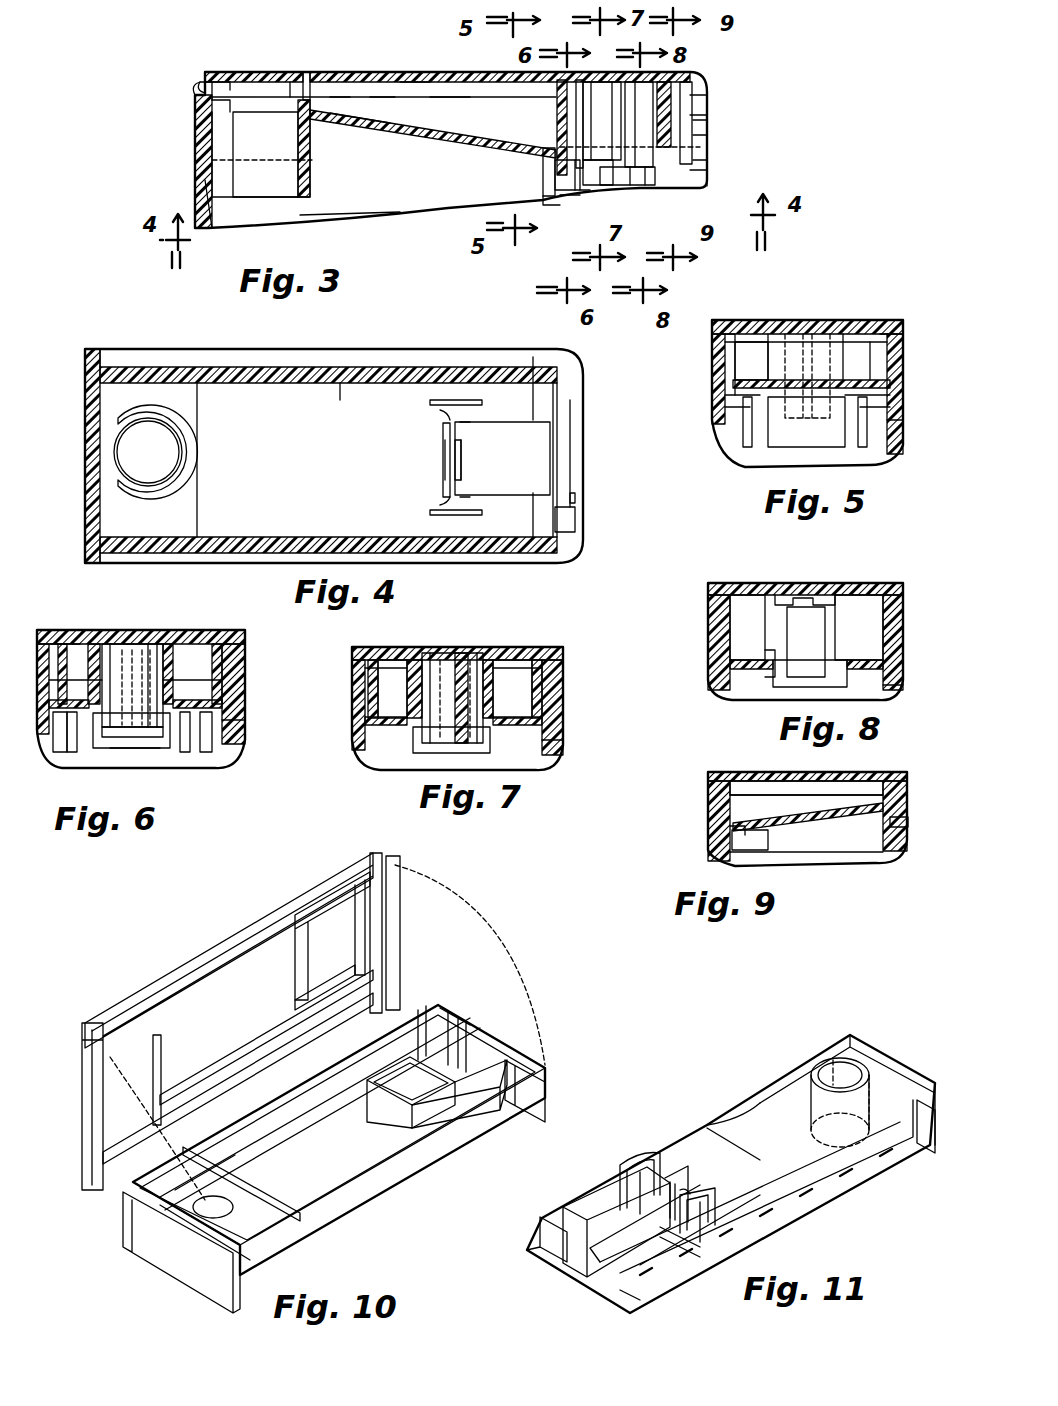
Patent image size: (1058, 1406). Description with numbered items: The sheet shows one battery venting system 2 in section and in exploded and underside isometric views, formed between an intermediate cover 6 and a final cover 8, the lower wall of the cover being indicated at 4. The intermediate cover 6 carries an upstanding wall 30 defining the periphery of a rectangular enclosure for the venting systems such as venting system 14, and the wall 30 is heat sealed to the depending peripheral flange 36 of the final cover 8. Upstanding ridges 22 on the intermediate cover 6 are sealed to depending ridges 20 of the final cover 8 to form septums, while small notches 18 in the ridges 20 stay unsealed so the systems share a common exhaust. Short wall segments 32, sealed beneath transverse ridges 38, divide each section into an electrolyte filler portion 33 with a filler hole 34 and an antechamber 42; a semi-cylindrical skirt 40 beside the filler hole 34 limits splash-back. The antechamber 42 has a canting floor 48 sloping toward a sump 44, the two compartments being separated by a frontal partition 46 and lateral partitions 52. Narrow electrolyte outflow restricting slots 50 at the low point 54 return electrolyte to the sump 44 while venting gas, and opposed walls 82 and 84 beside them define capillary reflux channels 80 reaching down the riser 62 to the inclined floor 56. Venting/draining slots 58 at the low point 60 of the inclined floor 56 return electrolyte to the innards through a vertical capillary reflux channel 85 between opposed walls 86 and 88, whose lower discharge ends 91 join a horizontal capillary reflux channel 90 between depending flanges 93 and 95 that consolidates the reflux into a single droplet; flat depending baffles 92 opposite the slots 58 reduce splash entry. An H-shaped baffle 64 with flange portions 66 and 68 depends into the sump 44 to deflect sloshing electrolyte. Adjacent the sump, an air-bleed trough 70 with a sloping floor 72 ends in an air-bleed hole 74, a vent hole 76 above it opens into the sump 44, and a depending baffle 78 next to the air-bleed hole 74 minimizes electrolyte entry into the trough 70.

In FIG. 3, the connector assembly 2 is at (372, 228).
In FIG. 3, the housing bottom wall 4 is at (205, 182).
In FIG. 4, the housing bottom wall 4 is at (95, 375).
In FIG. 5, the housing bottom wall 4 is at (900, 422).
In FIG. 6, the housing bottom wall 4 is at (212, 725).
In FIG. 7, the housing bottom wall 4 is at (532, 742).
In FIG. 8, the housing bottom wall 4 is at (885, 690).
In FIG. 3, the intermediate cover 6 is at (195, 120).
In FIG. 4, the intermediate cover 6 is at (235, 390).
In FIG. 5, the intermediate cover 6 is at (903, 338).
In FIG. 6, the intermediate cover 6 is at (215, 670).
In FIG. 7, the intermediate cover 6 is at (527, 696).
In FIG. 8, the intermediate cover 6 is at (890, 625).
In FIG. 9, the intermediate cover 6 is at (810, 820).
In FIG. 10, the intermediate cover 6 is at (518, 1058).
In FIG. 11, the intermediate cover 6 is at (790, 1118).
In FIG. 3, the final cover 8 is at (272, 78).
In FIG. 5, the final cover 8 is at (847, 332).
In FIG. 6, the final cover 8 is at (60, 640).
In FIG. 7, the final cover 8 is at (540, 657).
In FIG. 8, the final cover 8 is at (880, 592).
In FIG. 9, the final cover 8 is at (888, 786).
In FIG. 10, the final cover 8 is at (245, 1021).
In FIG. 3, the venting system 14 is at (215, 82).
In FIG. 3, the notches 18 is at (436, 109).
In FIG. 5, the notches 18 is at (740, 338).
In FIG. 10, the notches 18 is at (268, 950).
In FIG. 3, the depending ridges 20 is at (415, 88).
In FIG. 5, the depending ridges 20 is at (880, 340).
In FIG. 10, the depending ridges 20 is at (198, 983).
In FIG. 3, the upstanding ridges 22 is at (340, 103).
In FIG. 5, the upstanding ridges 22 is at (890, 372).
In FIG. 10, the upstanding ridges 22 is at (370, 1072).
In FIG. 3, the upstanding wall 30 is at (200, 106).
In FIG. 10, the upstanding wall 30 is at (130, 1205).
In FIG. 11, the upstanding wall 30 is at (921, 1150).
In FIG. 3, the short wall segments 32 is at (305, 105).
In FIG. 10, the short wall segments 32 is at (267, 1185).
In FIG. 3, the electrolyte filler portion 33 is at (255, 75).
In FIG. 3, the filler hole 34 is at (230, 100).
In FIG. 4, the filler hole 34 is at (118, 452).
In FIG. 10, the filler hole 34 is at (200, 1212).
In FIG. 11, the filler hole 34 is at (855, 1125).
In FIG. 3, the depending peripheral flange 36 is at (205, 90).
In FIG. 10, the depending peripheral flange 36 is at (100, 1090).
In FIG. 3, the transverse ridges 38 is at (300, 95).
In FIG. 10, the transverse ridges 38 is at (162, 1050).
In FIG. 3, the semi-cylindrical skirt 40 is at (305, 172).
In FIG. 4, the semi-cylindrical skirt 40 is at (192, 455).
In FIG. 11, the semi-cylindrical skirt 40 is at (828, 1062).
In FIG. 3, the antechamber 42 is at (380, 100).
In FIG. 5, the antechamber 42 is at (752, 360).
In FIG. 3, the sump 44 is at (557, 110).
In FIG. 6, the sump 44 is at (155, 667).
In FIG. 3, the frontal partition 46 is at (576, 125).
In FIG. 5, the frontal partition 46 is at (810, 350).
In FIG. 10, the frontal partition 46 is at (367, 1100).
In FIG. 3, the canting floor 48 is at (355, 132).
In FIG. 4, the canting floor 48 is at (360, 395).
In FIG. 5, the canting floor 48 is at (770, 386).
In FIG. 6, the canting floor 48 is at (135, 704).
In FIG. 7, the canting floor 48 is at (545, 718).
In FIG. 8, the canting floor 48 is at (740, 664).
In FIG. 10, the canting floor 48 is at (247, 1160).
In FIG. 11, the canting floor 48 is at (750, 1128).
In FIG. 3, the electrolyte outflow restricting slots 50 is at (690, 150).
In FIG. 7, the lateral partitions 52 is at (410, 680).
In FIG. 10, the lateral partitions 52 is at (395, 1077).
In FIG. 3, the low point 54 is at (698, 178).
In FIG. 8, the low point 54 is at (770, 652).
In FIG. 3, the inclined floor 56 is at (612, 178).
In FIG. 4, the inclined floor 56 is at (545, 452).
In FIG. 7, the inclined floor 56 is at (435, 753).
In FIG. 8, the inclined floor 56 is at (790, 684).
In FIG. 3, the venting/draining slots 58 is at (543, 160).
In FIG. 4, the venting/draining slots 58 is at (447, 470).
In FIG. 6, the venting/draining slots 58 is at (90, 732).
In FIG. 3, the low point 60 is at (550, 180).
In FIG. 6, the low point 60 is at (135, 738).
In FIG. 3, the riser 62 is at (652, 172).
In FIG. 8, the riser 62 is at (815, 668).
In FIG. 3, the H-shaped baffle 64 is at (597, 186).
In FIG. 6, the H-shaped baffle 64 is at (135, 665).
In FIG. 7, the H-shaped baffle 64 is at (446, 690).
In FIG. 10, the H-shaped baffle 64 is at (330, 965).
In FIG. 3, the flange portion 66 is at (575, 192).
In FIG. 10, the flange portion 66 is at (300, 995).
In FIG. 3, the flange portion 68 is at (634, 172).
In FIG. 7, the flange portion 68 is at (463, 686).
In FIG. 10, the flange portion 68 is at (384, 970).
In FIG. 3, the trough 70 is at (700, 125).
In FIG. 9, the trough 70 is at (745, 800).
In FIG. 3, the sloping floor 72 is at (700, 140).
In FIG. 9, the sloping floor 72 is at (822, 814).
In FIG. 4, the air-bleed hole 74 is at (560, 515).
In FIG. 9, the air-bleed hole 74 is at (745, 828).
In FIG. 3, the vent hole 76 is at (668, 90).
In FIG. 8, the vent hole 76 is at (805, 602).
In FIG. 3, the depending baffle 78 is at (700, 160).
In FIG. 4, the depending baffle 78 is at (574, 497).
In FIG. 9, the depending baffle 78 is at (745, 838).
In FIG. 3, the capillary reflux channels 80 is at (692, 105).
In FIG. 3, the opposed wall 82 is at (615, 128).
In FIG. 10, the opposed wall 82 is at (420, 1040).
In FIG. 3, the opposed wall 84 is at (690, 85).
In FIG. 8, the opposed wall 84 is at (765, 628).
In FIG. 10, the opposed wall 84 is at (460, 1040).
In FIG. 11, the vertical capillary reflux channel 85 is at (682, 1230).
In FIG. 4, the opposed wall 86 is at (472, 422).
In FIG. 11, the opposed wall 86 is at (660, 1205).
In FIG. 4, the opposed wall 88 is at (445, 418).
In FIG. 11, the opposed wall 88 is at (686, 1186).
In FIG. 4, the horizontal capillary reflux channel 90 is at (462, 458).
In FIG. 11, the horizontal capillary reflux channel 90 is at (676, 1178).
In FIG. 6, the lower discharge ends 91 is at (105, 748).
In FIG. 11, the lower discharge ends 91 is at (641, 1172).
In FIG. 3, the flat depending baffles 92 is at (542, 190).
In FIG. 4, the flat depending baffles 92 is at (462, 400).
In FIG. 5, the flat depending baffles 92 is at (745, 422).
In FIG. 6, the flat depending baffles 92 is at (63, 744).
In FIG. 11, the flat depending baffles 92 is at (622, 1180).
In FIG. 3, the depending flange 93 is at (580, 196).
In FIG. 4, the depending flange 93 is at (458, 470).
In FIG. 6, the depending flange 93 is at (150, 750).
In FIG. 11, the depending flange 93 is at (672, 1180).
In FIG. 3, the depending flange 95 is at (552, 195).
In FIG. 4, the depending flange 95 is at (440, 440).
In FIG. 5, the depending flange 95 is at (790, 420).
In FIG. 11, the depending flange 95 is at (676, 1185).